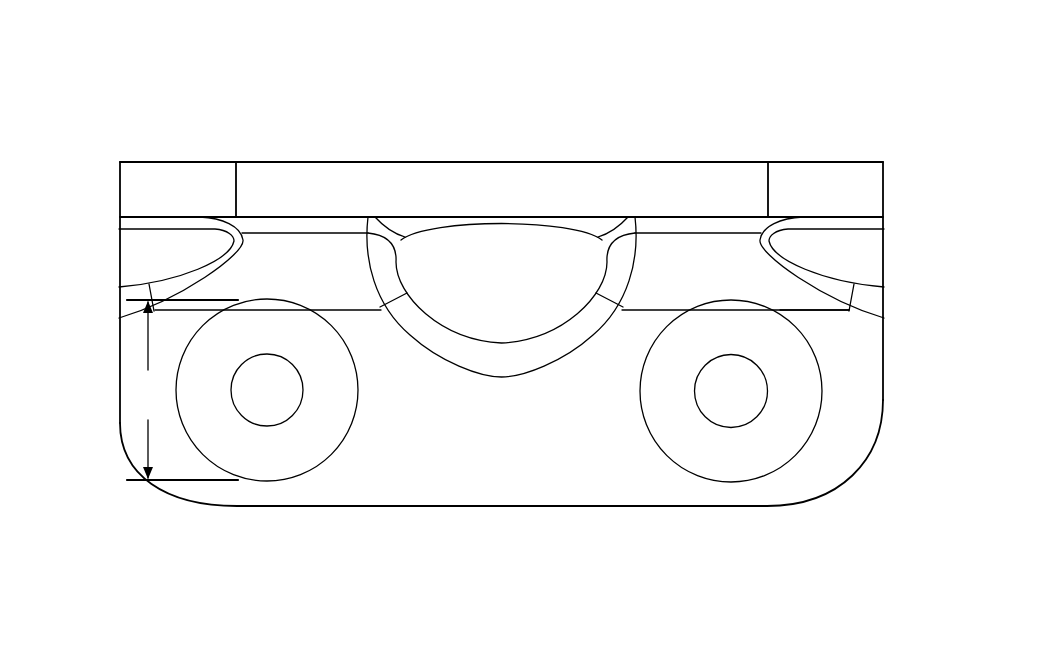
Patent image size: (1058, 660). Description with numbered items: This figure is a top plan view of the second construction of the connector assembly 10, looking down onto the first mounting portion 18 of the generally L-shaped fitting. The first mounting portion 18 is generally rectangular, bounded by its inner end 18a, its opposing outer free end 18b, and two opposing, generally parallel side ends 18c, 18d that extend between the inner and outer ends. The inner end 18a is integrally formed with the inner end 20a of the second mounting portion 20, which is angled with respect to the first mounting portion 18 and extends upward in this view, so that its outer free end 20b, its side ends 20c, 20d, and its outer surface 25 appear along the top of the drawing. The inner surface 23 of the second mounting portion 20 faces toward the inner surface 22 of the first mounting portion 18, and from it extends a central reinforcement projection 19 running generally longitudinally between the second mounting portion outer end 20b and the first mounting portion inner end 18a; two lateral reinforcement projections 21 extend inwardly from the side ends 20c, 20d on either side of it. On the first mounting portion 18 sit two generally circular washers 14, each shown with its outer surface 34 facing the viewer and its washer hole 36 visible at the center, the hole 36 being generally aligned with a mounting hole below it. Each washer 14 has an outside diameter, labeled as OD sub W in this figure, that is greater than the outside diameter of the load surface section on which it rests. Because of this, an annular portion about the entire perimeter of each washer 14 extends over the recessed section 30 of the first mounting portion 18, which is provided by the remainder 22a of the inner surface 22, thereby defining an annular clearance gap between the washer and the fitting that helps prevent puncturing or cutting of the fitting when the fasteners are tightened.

The connector assembly 10 is at (216, 102).
The washer 14 is at (358, 436).
The first mounting portion 18 is at (318, 524).
The inner end of first mounting portion 18a is at (641, 311).
The outer free end of first mounting portion 18b is at (513, 506).
The side end of first mounting portion 18c is at (884, 361).
The side end of first mounting portion 18d is at (119, 348).
The central reinforcement projection 19 is at (560, 248).
The second mounting portion 20 is at (456, 154).
The inner end of second mounting portion 20a is at (810, 308).
The outer free end of second mounting portion 20b is at (508, 180).
The side end of second mounting portion 20c is at (885, 238).
The side end of second mounting portion 20d is at (119, 210).
The lateral reinforcement projection 21 is at (137, 256).
The inner surface of first mounting portion 22 is at (598, 487).
The remainder of inner surface 22a is at (457, 473).
The inner surface of second mounting portion 23 is at (286, 246).
The outer surface of second mounting portion 25 is at (596, 160).
The recessed section 30 is at (318, 302).
The outer surface of washer 34 is at (343, 408).
The washer hole 36 is at (287, 357).